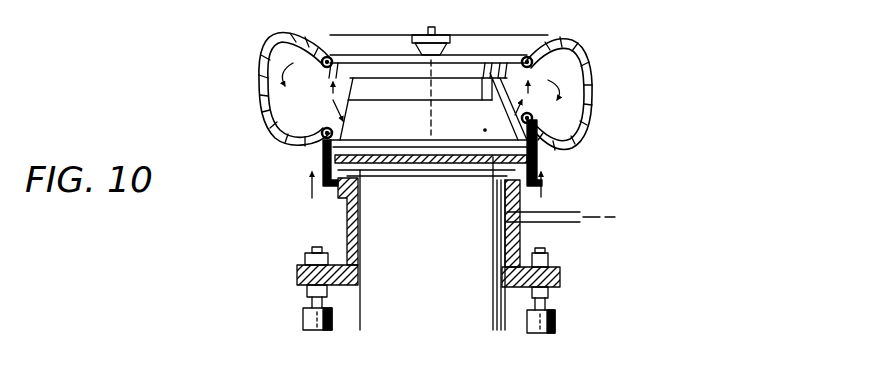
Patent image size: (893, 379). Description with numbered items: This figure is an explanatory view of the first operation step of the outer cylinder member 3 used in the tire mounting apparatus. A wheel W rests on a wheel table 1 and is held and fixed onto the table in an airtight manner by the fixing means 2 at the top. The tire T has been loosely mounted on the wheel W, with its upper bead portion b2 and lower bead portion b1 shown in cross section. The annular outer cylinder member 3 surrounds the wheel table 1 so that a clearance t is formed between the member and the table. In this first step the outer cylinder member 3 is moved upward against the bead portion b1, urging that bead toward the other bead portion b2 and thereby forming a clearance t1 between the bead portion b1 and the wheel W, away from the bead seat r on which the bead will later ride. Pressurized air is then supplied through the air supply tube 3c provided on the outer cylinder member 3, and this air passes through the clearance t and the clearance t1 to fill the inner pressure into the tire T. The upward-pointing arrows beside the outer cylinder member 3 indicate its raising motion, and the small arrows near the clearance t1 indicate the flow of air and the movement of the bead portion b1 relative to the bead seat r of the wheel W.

The tire T is at (587, 47).
The wheel W is at (485, 82).
The fixing means 2 is at (447, 30).
The bead portion b2 is at (330, 56).
The bead portion b1 is at (322, 137).
The clearance t1 is at (420, 92).
The bead seat r is at (477, 113).
The outer cylinder member 3 is at (537, 158).
The air supply tube 3c is at (567, 207).
The clearance t is at (507, 214).
The wheel table 1 is at (482, 315).